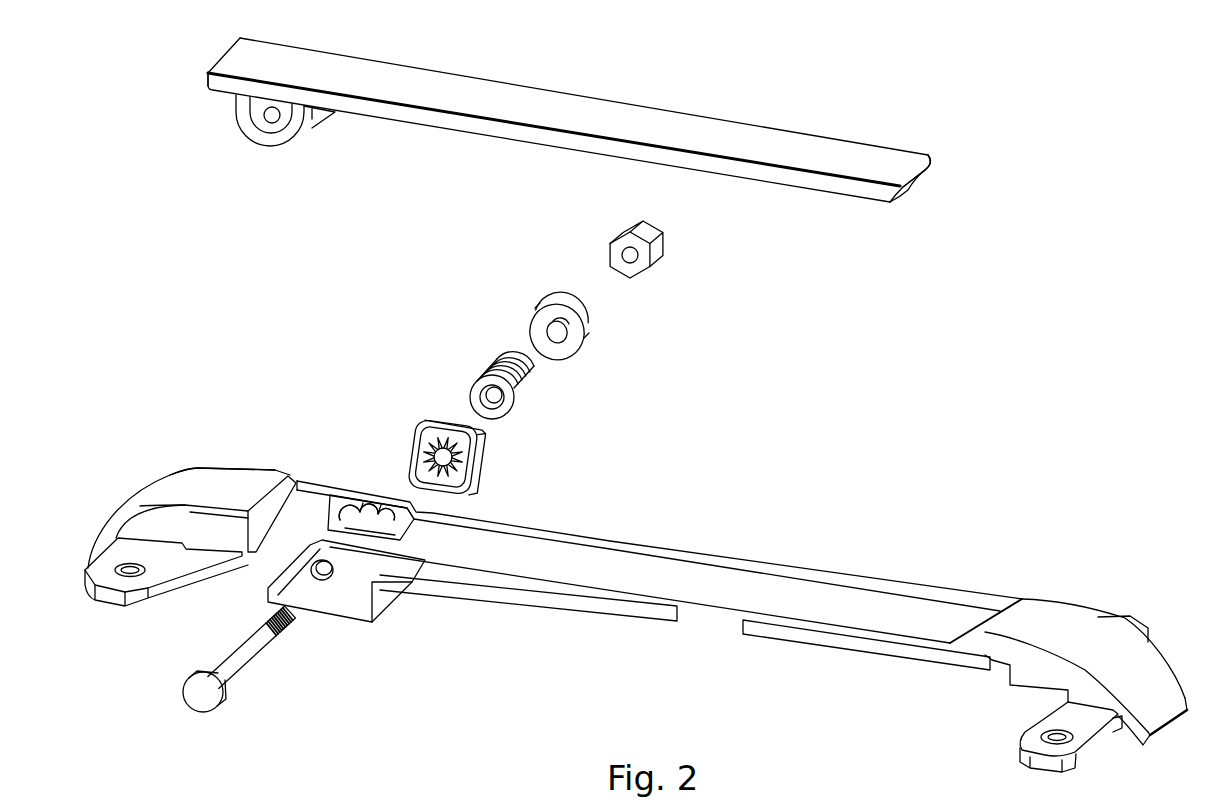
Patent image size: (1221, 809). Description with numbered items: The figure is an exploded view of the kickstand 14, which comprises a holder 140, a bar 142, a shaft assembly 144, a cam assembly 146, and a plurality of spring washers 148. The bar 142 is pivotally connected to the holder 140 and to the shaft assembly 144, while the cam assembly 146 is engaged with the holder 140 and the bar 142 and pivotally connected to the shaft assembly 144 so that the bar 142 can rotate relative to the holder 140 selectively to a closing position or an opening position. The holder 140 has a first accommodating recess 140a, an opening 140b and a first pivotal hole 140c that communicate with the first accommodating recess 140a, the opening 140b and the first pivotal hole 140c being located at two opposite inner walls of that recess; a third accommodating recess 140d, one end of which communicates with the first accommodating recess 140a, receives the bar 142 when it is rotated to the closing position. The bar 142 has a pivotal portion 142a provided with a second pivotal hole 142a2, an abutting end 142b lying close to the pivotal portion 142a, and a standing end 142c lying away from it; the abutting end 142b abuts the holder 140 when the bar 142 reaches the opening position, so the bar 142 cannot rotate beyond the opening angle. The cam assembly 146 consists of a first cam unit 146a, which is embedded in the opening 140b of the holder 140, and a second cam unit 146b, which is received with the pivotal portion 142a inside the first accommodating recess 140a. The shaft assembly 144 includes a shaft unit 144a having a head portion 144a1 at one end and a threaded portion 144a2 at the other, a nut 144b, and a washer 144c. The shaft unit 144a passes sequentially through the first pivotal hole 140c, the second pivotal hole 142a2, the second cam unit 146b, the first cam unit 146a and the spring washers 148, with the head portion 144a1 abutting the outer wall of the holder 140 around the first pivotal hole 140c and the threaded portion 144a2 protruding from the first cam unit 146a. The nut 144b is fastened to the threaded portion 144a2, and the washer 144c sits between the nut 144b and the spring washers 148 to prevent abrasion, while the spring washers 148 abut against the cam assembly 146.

The kickstand 14 is at (982, 122).
The bar 142 is at (665, 126).
The pivotal portion 142a is at (270, 148).
The second pivotal hole 142a2 is at (279, 122).
The abutting end 142b is at (207, 74).
The standing end 142c is at (930, 168).
The shaft assembly 144 is at (170, 658).
The shaft unit 144a is at (338, 661).
The head portion 144a1 is at (205, 700).
The threaded portion 144a2 is at (290, 620).
The nut 144b is at (663, 250).
The washer 144c is at (587, 330).
The cam assembly 146 is at (518, 550).
The first cam unit 146a is at (478, 455).
The second cam unit 146b is at (400, 540).
The spring washers 148 is at (530, 395).
The holder 140 is at (1052, 620).
The first accommodating recess 140a is at (310, 507).
The opening 140b is at (333, 512).
The first pivotal hole 140c is at (372, 580).
The third accommodating recess 140d is at (848, 600).